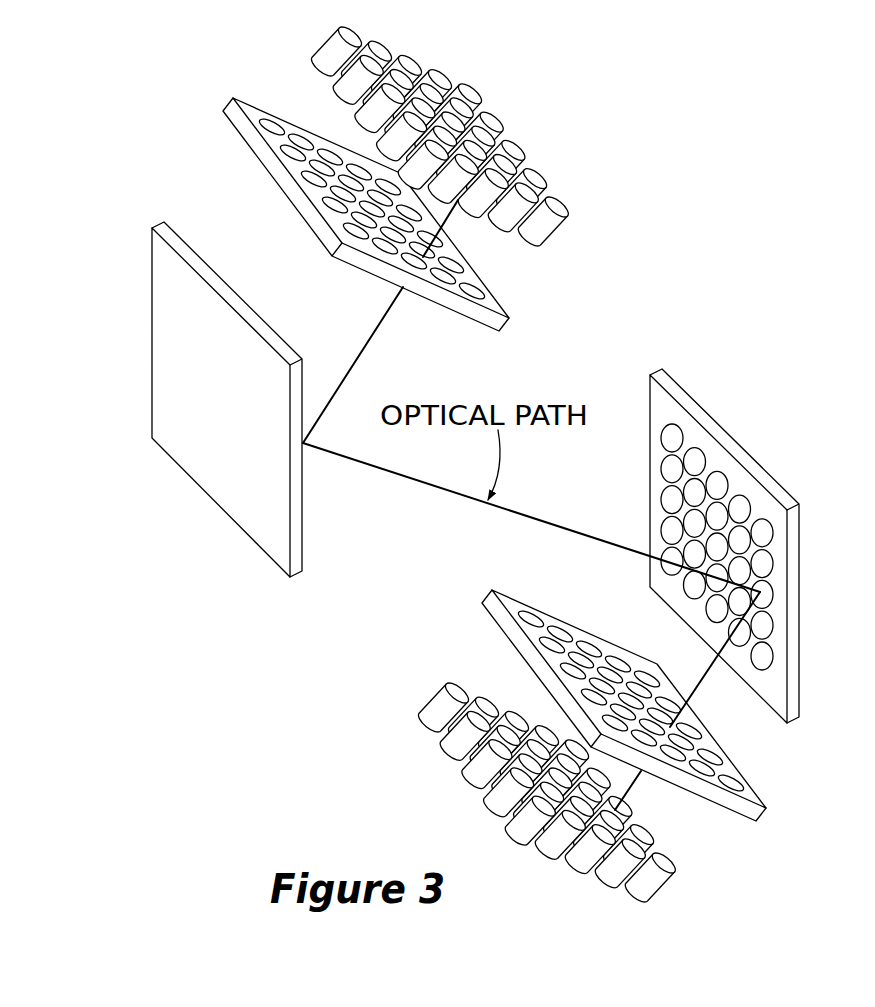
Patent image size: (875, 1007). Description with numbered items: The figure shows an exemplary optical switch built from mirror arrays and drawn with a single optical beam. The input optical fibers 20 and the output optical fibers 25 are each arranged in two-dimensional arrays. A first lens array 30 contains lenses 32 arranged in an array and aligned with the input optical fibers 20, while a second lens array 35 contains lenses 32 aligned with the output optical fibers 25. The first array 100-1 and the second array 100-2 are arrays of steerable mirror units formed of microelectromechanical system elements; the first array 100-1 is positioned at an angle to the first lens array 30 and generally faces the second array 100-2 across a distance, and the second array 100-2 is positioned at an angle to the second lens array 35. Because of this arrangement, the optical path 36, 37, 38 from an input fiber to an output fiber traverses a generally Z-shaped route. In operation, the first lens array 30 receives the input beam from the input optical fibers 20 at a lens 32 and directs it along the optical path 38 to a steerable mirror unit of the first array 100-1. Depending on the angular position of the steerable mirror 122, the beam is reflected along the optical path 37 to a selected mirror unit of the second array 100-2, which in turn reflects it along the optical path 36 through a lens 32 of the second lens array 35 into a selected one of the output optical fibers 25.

The input optical fibers 20 is at (568, 218).
The output optical fibers 25 is at (426, 736).
The first lens array 30 is at (243, 116).
The lenses 32 is at (273, 114).
The second lens array 35 is at (647, 713).
The optical path 36 is at (704, 690).
The optical path 37 is at (484, 509).
The optical path 38 is at (355, 342).
The first array 100-1 is at (150, 369).
The second array 100-2 is at (752, 447).
The steerable mirror 122 is at (659, 424).